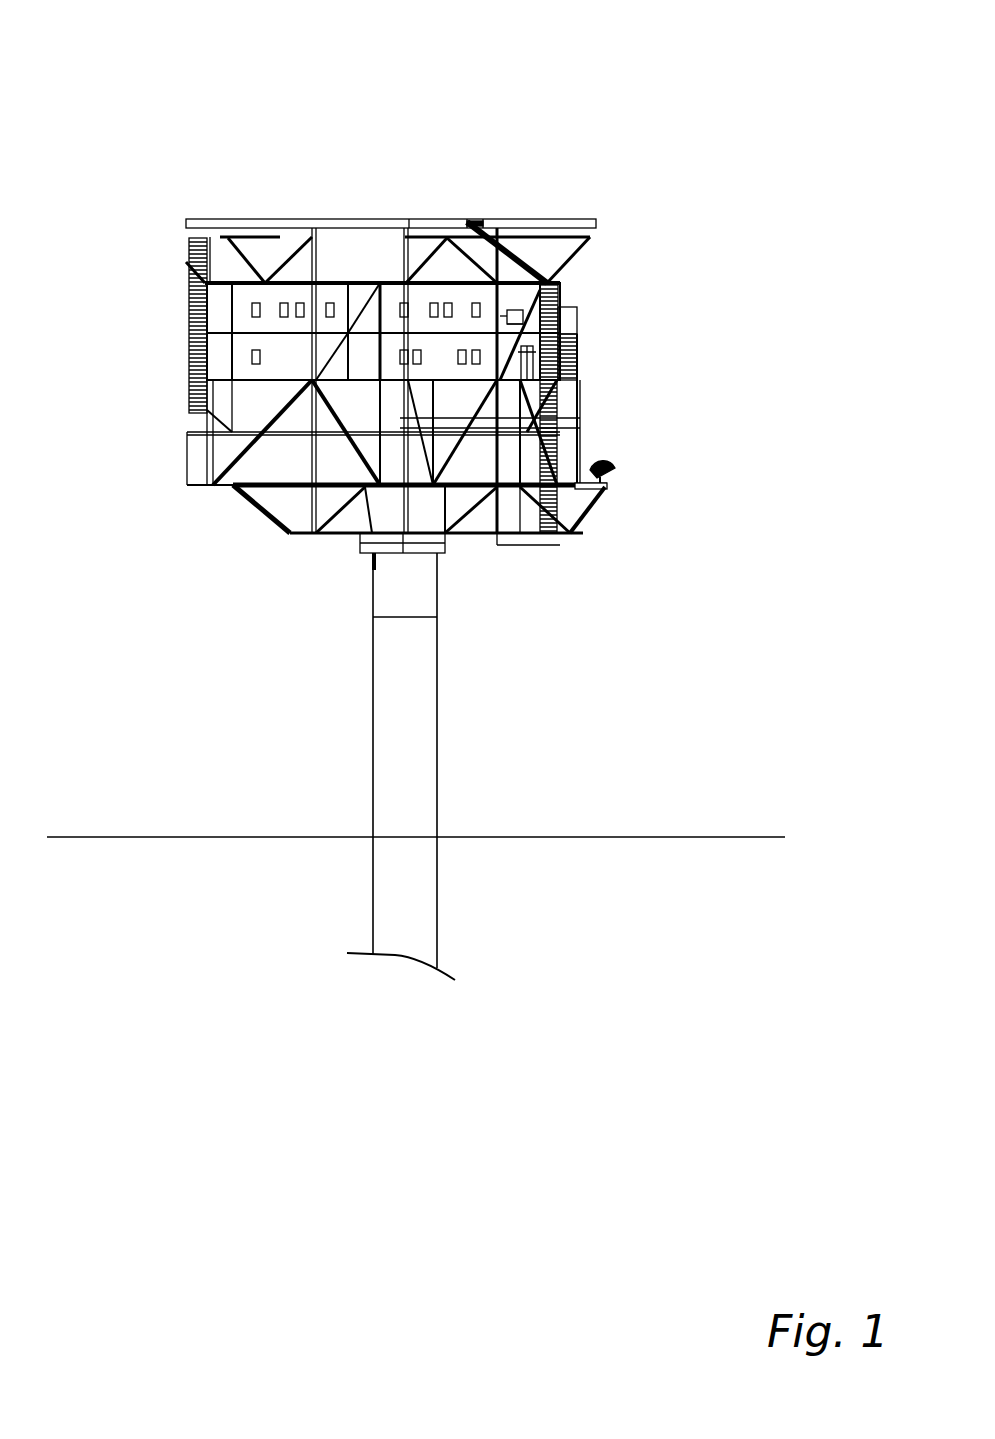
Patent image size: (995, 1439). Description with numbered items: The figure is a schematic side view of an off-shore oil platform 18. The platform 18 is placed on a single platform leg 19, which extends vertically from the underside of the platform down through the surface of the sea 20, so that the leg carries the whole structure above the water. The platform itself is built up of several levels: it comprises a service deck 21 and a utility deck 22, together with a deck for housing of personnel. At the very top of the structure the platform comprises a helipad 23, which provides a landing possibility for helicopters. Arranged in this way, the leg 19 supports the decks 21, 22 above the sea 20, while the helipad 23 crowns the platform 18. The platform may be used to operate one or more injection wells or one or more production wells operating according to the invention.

The off-shore oil platform 18 is at (122, 140).
The platform leg 19 is at (408, 678).
The surface of the sea 20 is at (537, 837).
The service deck 21 is at (327, 515).
The utility deck 22 is at (322, 452).
The helipad 23 is at (376, 218).